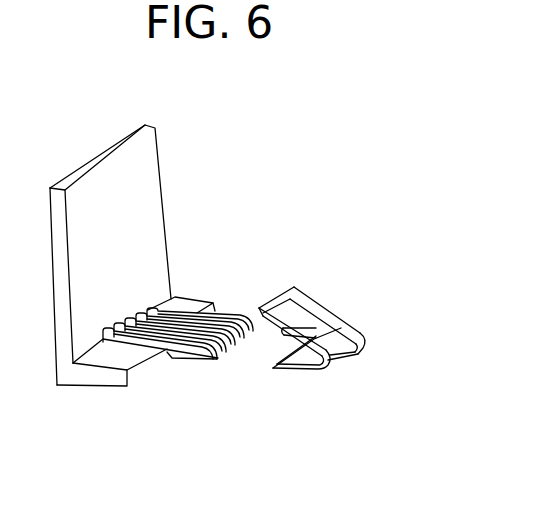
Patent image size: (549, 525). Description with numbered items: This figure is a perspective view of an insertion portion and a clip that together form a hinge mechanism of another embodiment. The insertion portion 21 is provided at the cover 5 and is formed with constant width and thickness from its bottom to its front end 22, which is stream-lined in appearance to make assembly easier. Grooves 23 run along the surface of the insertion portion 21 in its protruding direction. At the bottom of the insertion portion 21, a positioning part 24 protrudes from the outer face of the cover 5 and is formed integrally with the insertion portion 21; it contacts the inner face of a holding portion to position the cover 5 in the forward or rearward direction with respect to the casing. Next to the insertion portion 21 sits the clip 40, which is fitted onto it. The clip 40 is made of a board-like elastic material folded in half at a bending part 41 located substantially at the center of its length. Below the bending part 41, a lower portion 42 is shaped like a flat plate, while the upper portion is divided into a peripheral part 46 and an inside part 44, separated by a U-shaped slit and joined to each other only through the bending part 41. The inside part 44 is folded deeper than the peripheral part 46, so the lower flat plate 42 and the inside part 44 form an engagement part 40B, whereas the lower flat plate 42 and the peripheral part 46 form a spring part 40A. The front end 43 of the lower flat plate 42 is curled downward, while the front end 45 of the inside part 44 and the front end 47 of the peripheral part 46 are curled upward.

The cover 5 is at (150, 162).
The insertion portion 21 is at (181, 307).
The front end 22 is at (220, 362).
The grooves 23 is at (141, 309).
The positioning part 24 is at (98, 380).
The clip 40 is at (346, 329).
The spring part 40A is at (361, 269).
The engagement part 40B is at (325, 402).
The bending part 41 is at (372, 342).
The lower portion 42 is at (313, 370).
The front end 43 is at (275, 373).
The inside part 44 is at (362, 355).
The front end 45 is at (310, 357).
The peripheral part 46 is at (322, 297).
The front end 47 is at (278, 287).